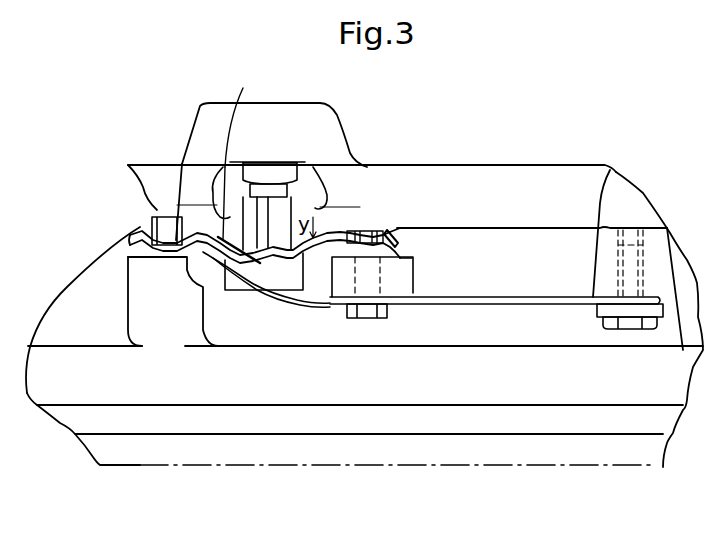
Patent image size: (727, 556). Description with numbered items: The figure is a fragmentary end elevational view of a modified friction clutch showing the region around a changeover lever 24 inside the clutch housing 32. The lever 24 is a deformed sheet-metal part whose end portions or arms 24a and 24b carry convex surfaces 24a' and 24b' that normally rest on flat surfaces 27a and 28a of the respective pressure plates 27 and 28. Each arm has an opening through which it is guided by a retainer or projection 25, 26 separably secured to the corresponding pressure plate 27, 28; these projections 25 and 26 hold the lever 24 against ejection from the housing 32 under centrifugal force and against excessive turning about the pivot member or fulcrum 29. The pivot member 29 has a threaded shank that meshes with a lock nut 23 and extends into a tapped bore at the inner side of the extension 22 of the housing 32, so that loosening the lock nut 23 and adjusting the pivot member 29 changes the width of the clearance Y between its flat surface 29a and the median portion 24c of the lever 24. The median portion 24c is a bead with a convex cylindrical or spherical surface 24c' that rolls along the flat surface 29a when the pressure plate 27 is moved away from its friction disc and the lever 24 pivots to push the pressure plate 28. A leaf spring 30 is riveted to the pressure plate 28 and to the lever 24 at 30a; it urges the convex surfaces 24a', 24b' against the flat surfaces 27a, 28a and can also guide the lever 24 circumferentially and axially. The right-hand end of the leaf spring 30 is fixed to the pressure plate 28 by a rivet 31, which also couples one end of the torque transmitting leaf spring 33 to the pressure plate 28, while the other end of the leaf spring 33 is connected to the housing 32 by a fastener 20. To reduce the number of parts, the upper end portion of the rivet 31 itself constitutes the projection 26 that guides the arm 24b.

The fastener 20 is at (627, 330).
The extension of the housing 22 is at (208, 128).
The lock nut 23 is at (282, 170).
The changeover lever 24 is at (192, 240).
The end portion or arm of the lever 24a is at (84, 198).
The convex surface 24a' is at (83, 303).
The end portion or arm of the lever 24b is at (411, 219).
The convex surface 24b' is at (448, 223).
The median portion of the lever 24c is at (266, 325).
The convex surface of the median portion 24c' is at (248, 284).
The retainer or projection 25 is at (160, 225).
The retainer or projection 26 is at (367, 233).
The pressure plate 27 is at (167, 393).
The flat surface 27a is at (163, 257).
The pressure plate 28 is at (393, 282).
The flat surface 28a is at (412, 258).
The pivot member or fulcrum 29 is at (283, 207).
The flat surface of the pivot member 29a is at (260, 170).
The leaf spring 30 is at (323, 303).
The rivet connection of the leaf spring to the lever 30a is at (243, 113).
The rivet 31 is at (367, 320).
The clutch housing 32 is at (553, 178).
The torque transmitting leaf spring 33 is at (505, 305).